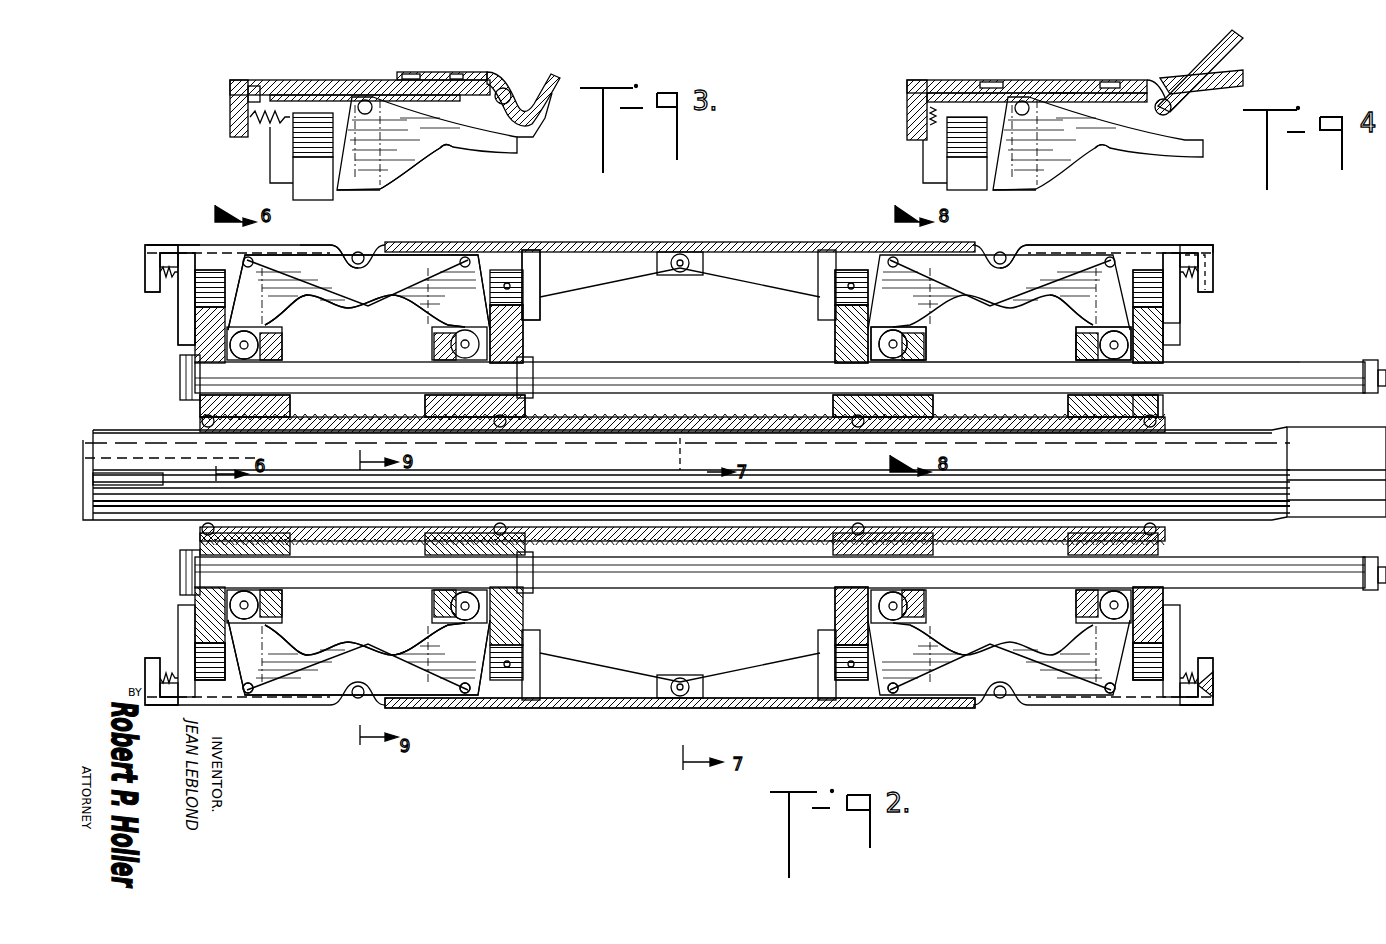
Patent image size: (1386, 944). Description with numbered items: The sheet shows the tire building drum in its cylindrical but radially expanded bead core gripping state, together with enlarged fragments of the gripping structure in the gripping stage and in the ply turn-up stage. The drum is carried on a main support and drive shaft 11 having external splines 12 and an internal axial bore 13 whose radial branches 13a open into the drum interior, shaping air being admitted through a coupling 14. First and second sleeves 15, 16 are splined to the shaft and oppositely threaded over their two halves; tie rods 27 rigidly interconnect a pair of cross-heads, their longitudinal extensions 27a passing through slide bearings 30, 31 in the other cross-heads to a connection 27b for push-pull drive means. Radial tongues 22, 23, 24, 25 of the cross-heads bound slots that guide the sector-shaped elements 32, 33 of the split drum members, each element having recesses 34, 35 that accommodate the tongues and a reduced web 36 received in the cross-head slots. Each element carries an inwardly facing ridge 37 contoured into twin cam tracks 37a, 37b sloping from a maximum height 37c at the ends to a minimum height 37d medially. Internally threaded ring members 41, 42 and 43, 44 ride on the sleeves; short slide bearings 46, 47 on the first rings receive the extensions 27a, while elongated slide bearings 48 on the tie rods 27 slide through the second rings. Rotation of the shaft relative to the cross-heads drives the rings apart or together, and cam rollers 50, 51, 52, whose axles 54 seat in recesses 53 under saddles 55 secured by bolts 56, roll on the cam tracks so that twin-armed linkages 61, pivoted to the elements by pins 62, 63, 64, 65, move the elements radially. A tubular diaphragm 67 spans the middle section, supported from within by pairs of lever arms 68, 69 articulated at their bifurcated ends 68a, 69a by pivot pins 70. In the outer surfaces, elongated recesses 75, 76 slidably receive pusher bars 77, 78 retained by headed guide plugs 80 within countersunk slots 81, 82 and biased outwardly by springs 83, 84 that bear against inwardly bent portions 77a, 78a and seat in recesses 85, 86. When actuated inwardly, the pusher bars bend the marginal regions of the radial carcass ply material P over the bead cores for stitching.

In FIG. 2, the main support and drive shaft 11 is at (1238, 440).
In FIG. 2, the longitudinal external splines 12 is at (622, 430).
In FIG. 2, the internal axial bore 13 is at (480, 470).
In FIG. 2, the radial branches 13a is at (705, 430).
In FIG. 2, the coupling 14 is at (118, 435).
In FIG. 2, the first sleeve 15 is at (1030, 425).
In FIG. 2, the second sleeve 16 is at (345, 425).
In FIG. 2, the radial tongue 22 is at (1165, 640).
In FIG. 2, the radial tongue 23 is at (840, 625).
In FIG. 2, the radial tongue 24 is at (540, 300).
In FIG. 2, the radial tongue 25 is at (190, 315).
In FIG. 3, the radial tongue 25 is at (300, 185).
In FIG. 4, the radial tongue 25 is at (967, 173).
In FIG. 2, the tie rods 27 is at (380, 375).
In FIG. 2, the longitudinal extensions 27a is at (653, 368).
In FIG. 2, the drive connection 27b is at (1372, 362).
In FIG. 2, the slide bearing 30 is at (1165, 360).
In FIG. 2, the slide bearing 31 is at (838, 590).
In FIG. 2, the sector-shaped elements 32 is at (1183, 300).
In FIG. 2, the sector-shaped elements 33 is at (425, 252).
In FIG. 3, the sector-shaped elements 33 is at (272, 178).
In FIG. 4, the sector-shaped elements 33 is at (925, 160).
In FIG. 2, the recess 34 is at (200, 290).
In FIG. 3, the recess 34 is at (293, 140).
In FIG. 4, the recess 34 is at (967, 137).
In FIG. 2, the recess 35 is at (855, 275).
In FIG. 2, the web 36 is at (200, 640).
In FIG. 2, the ridge 37 is at (360, 308).
In FIG. 3, the ridge 37 is at (518, 150).
In FIG. 4, the ridge 37 is at (1098, 143).
In FIG. 2, the cam track 37a is at (425, 640).
In FIG. 2, the cam track 37b is at (290, 312).
In FIG. 2, the maximum radial height 37c is at (380, 240).
In FIG. 3, the maximum radial height 37c is at (365, 192).
In FIG. 4, the maximum radial height 37c is at (1020, 192).
In FIG. 3, the minimum radial height 37d is at (452, 148).
In FIG. 4, the minimum radial height 37d is at (1108, 150).
In FIG. 2, the ring member 41 is at (1080, 405).
In FIG. 2, the ring member 42 is at (928, 405).
In FIG. 2, the ring member 43 is at (425, 408).
In FIG. 2, the ring member 44 is at (285, 408).
In FIG. 2, the short slide bearing 46 is at (1078, 357).
In FIG. 2, the short slide bearing 47 is at (920, 355).
In FIG. 2, the elongated slide bearings 48 is at (362, 553).
In FIG. 2, the cam roller 50 is at (850, 345).
In FIG. 2, the cam roller 51 is at (525, 340).
In FIG. 2, the cam roller 52 is at (262, 346).
In FIG. 2, the recesses 53 is at (200, 603).
In FIG. 2, the axles 54 is at (1175, 345).
In FIG. 2, the saddles 55 is at (1068, 335).
In FIG. 2, the bolts 56 is at (930, 330).
In FIG. 2, the twin-armed linkage 61 is at (305, 622).
In FIG. 3, the twin-armed linkage 61 is at (425, 160).
In FIG. 2, the pivot pin 62 is at (470, 665).
In FIG. 2, the pivot pin 63 is at (900, 698).
In FIG. 2, the pivot pin 64 is at (468, 700).
In FIG. 3, the pivot pin 65 is at (363, 100).
In FIG. 2, the tubular diaphragm 67 is at (578, 710).
In FIG. 3, the tubular diaphragm 67 is at (543, 116).
In FIG. 2, the lever arm 68 is at (752, 280).
In FIG. 2, the bifurcated end 68a is at (700, 672).
In FIG. 2, the lever arm 69 is at (615, 285).
In FIG. 2, the bifurcated end 69a is at (672, 672).
In FIG. 2, the pivot pins 70 is at (680, 273).
In FIG. 2, the elongated recess 75 is at (1092, 245).
In FIG. 2, the elongated recess 76 is at (315, 242).
In FIG. 4, the elongated recess 76 is at (1055, 92).
In FIG. 2, the pusher bar 77 is at (1200, 245).
In FIG. 2, the radially inwardly bent portion 77a is at (1215, 250).
In FIG. 3, the pusher bar 78 is at (378, 80).
In FIG. 4, the pusher bar 78 is at (1010, 80).
In FIG. 2, the radially inwardly bent portion 78a is at (150, 262).
In FIG. 3, the radially inwardly bent portion 78a is at (232, 90).
In FIG. 4, the radially inwardly bent portion 78a is at (909, 100).
In FIG. 3, the headed guide plug 80 is at (440, 72).
In FIG. 4, the headed guide plug 80 is at (965, 80).
In FIG. 2, the countersunk slot 81 is at (1185, 242).
In FIG. 2, the countersunk slot 82 is at (192, 245).
In FIG. 3, the countersunk slot 82 is at (283, 80).
In FIG. 4, the countersunk slot 82 is at (1120, 80).
In FIG. 2, the spring 83 is at (1200, 705).
In FIG. 3, the spring 84 is at (250, 118).
In FIG. 4, the spring 84 is at (928, 120).
In FIG. 2, the recess 85 is at (1200, 285).
In FIG. 3, the recess 86 is at (254, 86).
In FIG. 4, the radial carcass ply material P is at (1245, 80).